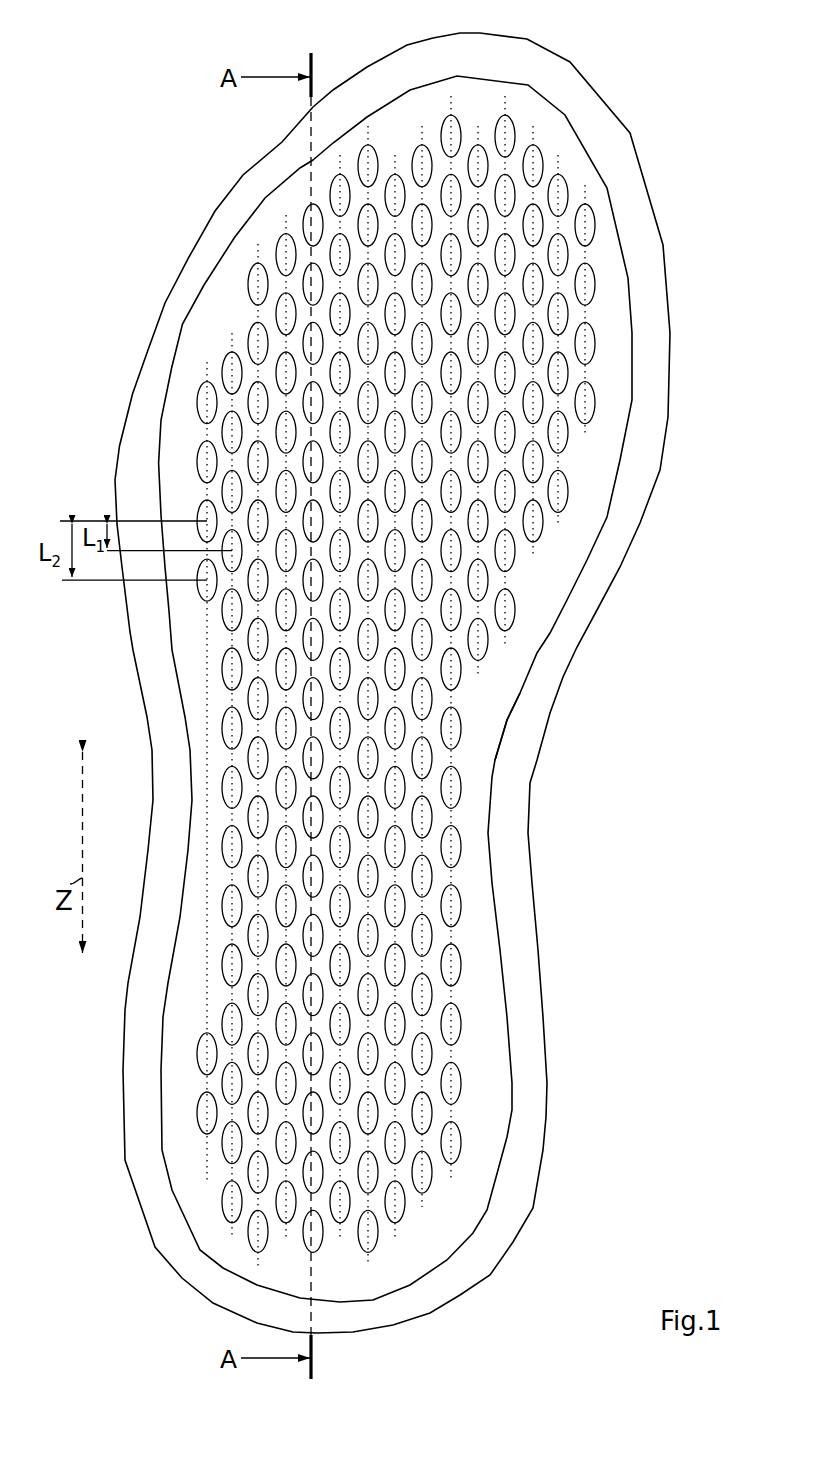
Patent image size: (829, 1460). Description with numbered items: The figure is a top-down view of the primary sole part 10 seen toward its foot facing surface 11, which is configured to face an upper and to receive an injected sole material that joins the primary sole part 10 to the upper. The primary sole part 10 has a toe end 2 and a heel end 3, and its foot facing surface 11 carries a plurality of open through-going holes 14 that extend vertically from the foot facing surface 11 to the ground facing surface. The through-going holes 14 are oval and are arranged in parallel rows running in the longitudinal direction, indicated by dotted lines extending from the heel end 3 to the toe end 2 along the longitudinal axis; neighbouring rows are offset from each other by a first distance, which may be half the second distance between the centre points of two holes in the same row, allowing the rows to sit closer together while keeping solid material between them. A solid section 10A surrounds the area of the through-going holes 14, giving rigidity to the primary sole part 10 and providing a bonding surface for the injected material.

The primary sole part 10 is at (443, 694).
The solid section 10A is at (488, 995).
The toe end 2 is at (485, 33).
The heel end 3 is at (353, 1332).
The foot facing surface 11 is at (508, 716).
The through-going holes 14 is at (253, 339).